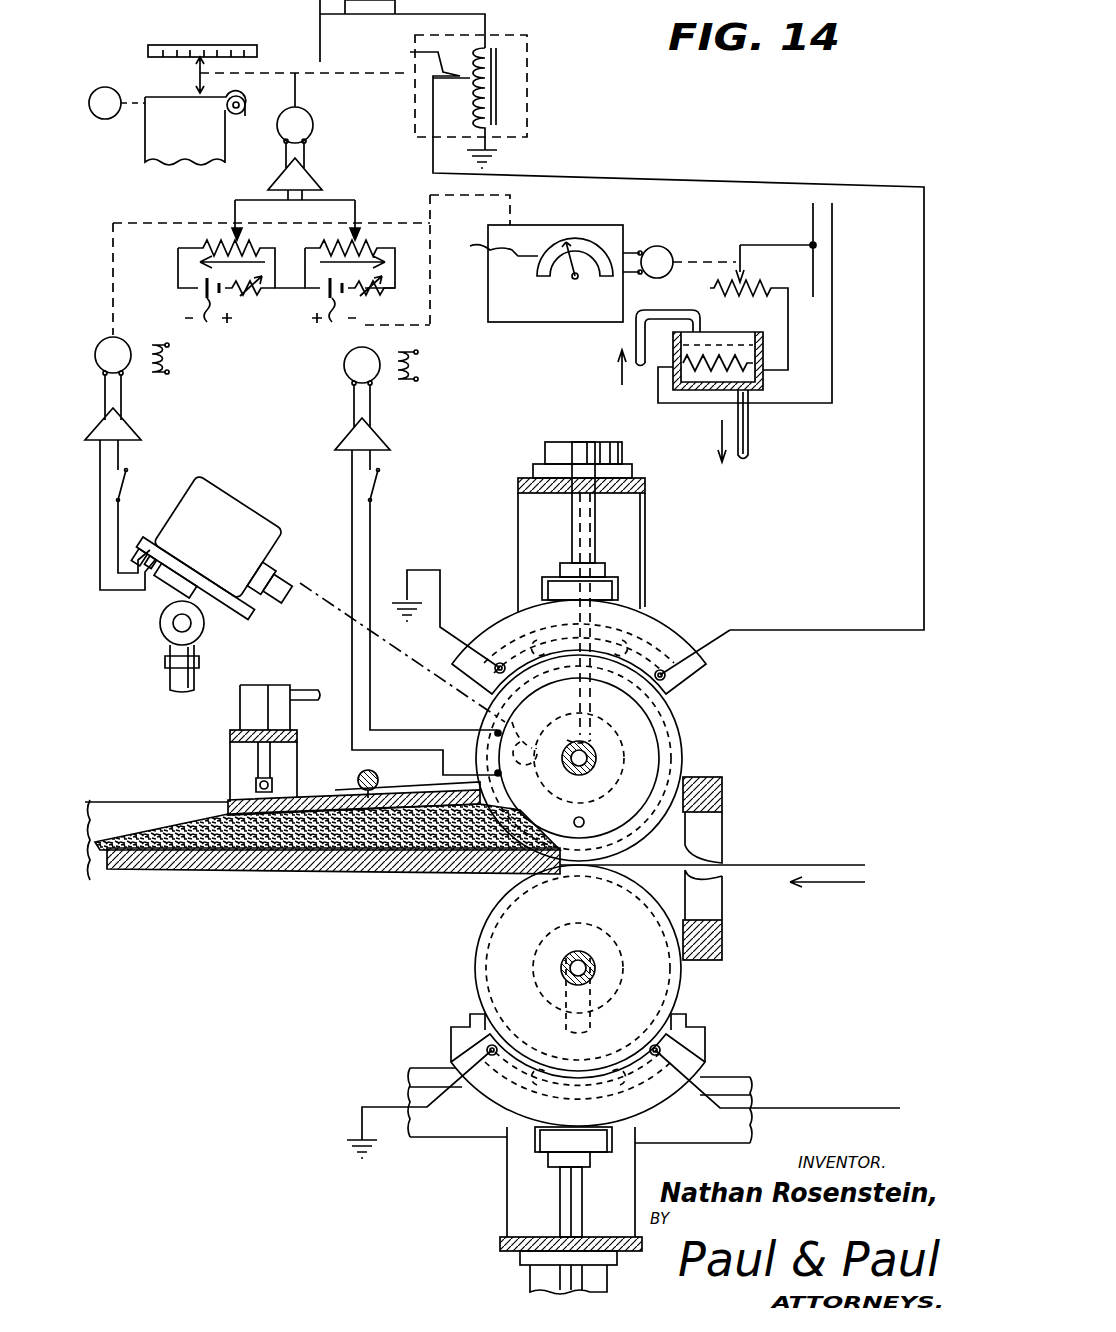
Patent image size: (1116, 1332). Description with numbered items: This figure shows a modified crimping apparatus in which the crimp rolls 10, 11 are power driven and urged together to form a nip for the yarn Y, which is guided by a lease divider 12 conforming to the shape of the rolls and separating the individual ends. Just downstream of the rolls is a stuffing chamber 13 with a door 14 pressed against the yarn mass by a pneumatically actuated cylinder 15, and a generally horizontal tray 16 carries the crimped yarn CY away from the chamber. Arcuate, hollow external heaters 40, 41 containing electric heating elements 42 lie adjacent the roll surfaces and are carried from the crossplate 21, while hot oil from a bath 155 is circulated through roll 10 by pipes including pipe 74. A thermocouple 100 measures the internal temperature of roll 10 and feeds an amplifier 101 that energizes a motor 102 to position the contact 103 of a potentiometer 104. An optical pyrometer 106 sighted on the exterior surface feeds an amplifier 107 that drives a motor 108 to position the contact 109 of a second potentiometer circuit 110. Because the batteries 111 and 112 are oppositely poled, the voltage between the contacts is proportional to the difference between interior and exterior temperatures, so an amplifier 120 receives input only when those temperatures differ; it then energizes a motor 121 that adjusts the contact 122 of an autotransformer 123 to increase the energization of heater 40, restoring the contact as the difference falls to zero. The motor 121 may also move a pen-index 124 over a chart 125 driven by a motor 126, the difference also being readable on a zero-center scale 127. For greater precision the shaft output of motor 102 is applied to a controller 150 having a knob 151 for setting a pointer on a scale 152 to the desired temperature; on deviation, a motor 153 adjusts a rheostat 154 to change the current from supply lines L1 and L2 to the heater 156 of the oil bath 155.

The crimp roll 10 is at (682, 724).
The crimp roll 11 is at (476, 936).
The lease divider 12 is at (700, 830).
The stuffing chamber 13 is at (428, 782).
The door 14 is at (234, 800).
The pneumatically actuated cylinder 15 is at (244, 700).
The tray 16 is at (96, 874).
The crossplate 21 is at (642, 492).
The heater 40 is at (561, 630).
The heater 41 is at (710, 1057).
The electric heating elements 42 is at (516, 658).
The pipe 74 is at (636, 348).
The thermocouple 100 is at (508, 720).
The amplifier 101 is at (338, 434).
The motor 102 is at (346, 364).
The contact 103 is at (358, 224).
The potentiometer 104 is at (344, 244).
The optical pyrometer 106 is at (244, 518).
The amplifier 107 is at (128, 432).
The motor 108 is at (125, 365).
The contact 109 is at (228, 218).
The potentiometer circuit 110 is at (204, 244).
The battery 111 is at (214, 326).
The battery 112 is at (324, 326).
The amplifier 120 is at (312, 178).
The motor 121 is at (313, 125).
The contact 122 is at (408, 50).
The autotransformer 123 is at (500, 80).
The pen-index 124 is at (198, 82).
The chart 125 is at (148, 136).
The motor 126 is at (108, 89).
The scale 127 is at (196, 44).
The controller 150 is at (555, 254).
The knob 151 is at (552, 280).
The scale 152 is at (487, 248).
The motor 153 is at (658, 246).
The rheostat 154 is at (756, 288).
The hot oil bath 155 is at (755, 380).
The heater 156 is at (737, 356).
The supply line L1 is at (813, 212).
The supply line L2 is at (832, 215).
The yarn Y is at (822, 868).
The crimped yarn CY is at (90, 804).